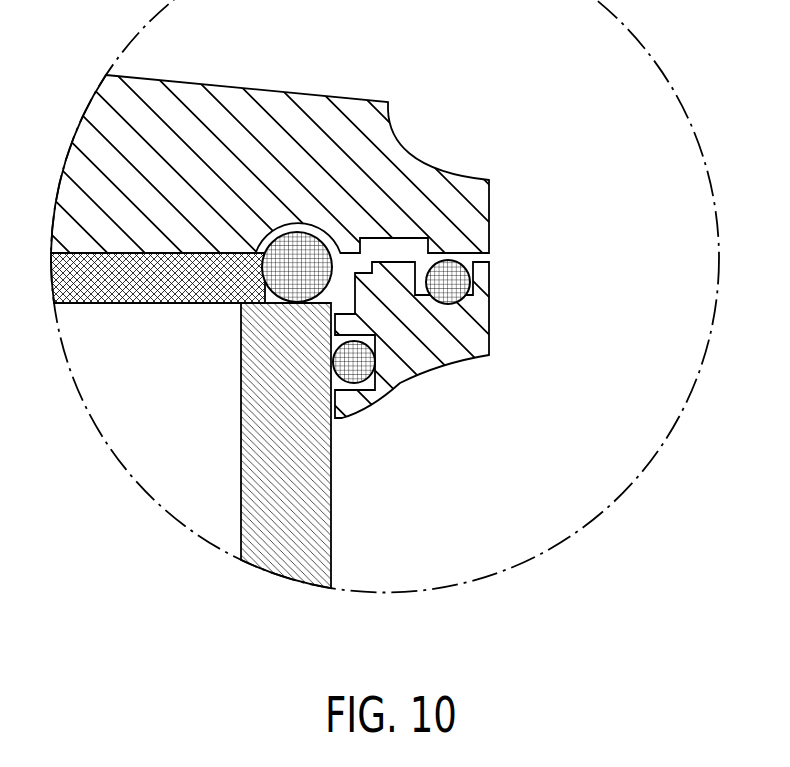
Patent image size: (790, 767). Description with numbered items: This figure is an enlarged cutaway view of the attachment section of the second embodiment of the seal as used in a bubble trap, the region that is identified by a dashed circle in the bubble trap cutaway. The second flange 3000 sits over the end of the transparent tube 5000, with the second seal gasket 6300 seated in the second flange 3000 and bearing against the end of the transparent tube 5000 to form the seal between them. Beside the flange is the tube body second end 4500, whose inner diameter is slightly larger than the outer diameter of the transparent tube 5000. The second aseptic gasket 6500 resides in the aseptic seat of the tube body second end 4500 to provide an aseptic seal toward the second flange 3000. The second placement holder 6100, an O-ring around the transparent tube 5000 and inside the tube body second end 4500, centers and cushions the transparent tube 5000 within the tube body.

The second flange 3000 is at (265, 95).
The transparent tube 5000 is at (267, 375).
The tube body second end 4500 is at (437, 333).
The second seal gasket 6300 is at (287, 262).
The second aseptic gasket 6500 is at (457, 288).
The second placement holder 6100 is at (350, 370).